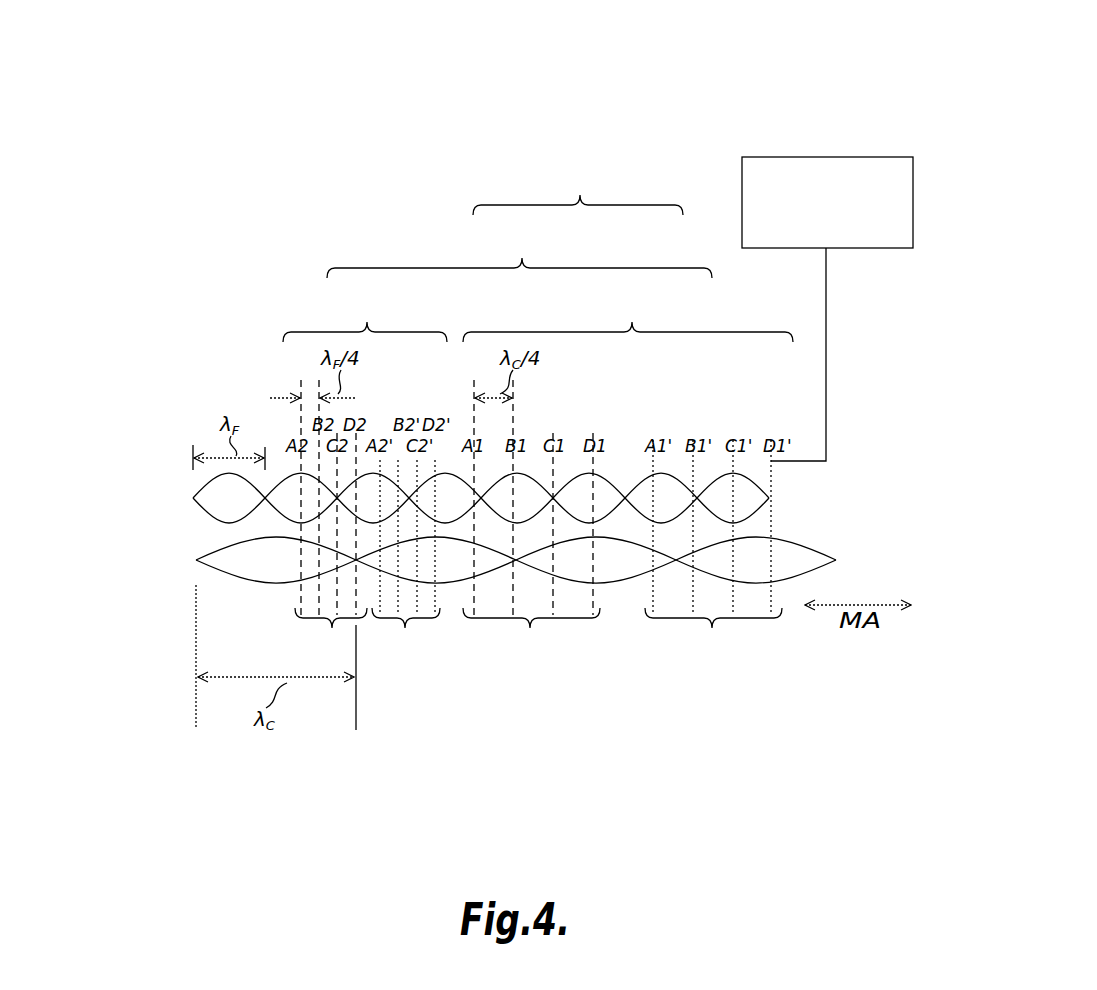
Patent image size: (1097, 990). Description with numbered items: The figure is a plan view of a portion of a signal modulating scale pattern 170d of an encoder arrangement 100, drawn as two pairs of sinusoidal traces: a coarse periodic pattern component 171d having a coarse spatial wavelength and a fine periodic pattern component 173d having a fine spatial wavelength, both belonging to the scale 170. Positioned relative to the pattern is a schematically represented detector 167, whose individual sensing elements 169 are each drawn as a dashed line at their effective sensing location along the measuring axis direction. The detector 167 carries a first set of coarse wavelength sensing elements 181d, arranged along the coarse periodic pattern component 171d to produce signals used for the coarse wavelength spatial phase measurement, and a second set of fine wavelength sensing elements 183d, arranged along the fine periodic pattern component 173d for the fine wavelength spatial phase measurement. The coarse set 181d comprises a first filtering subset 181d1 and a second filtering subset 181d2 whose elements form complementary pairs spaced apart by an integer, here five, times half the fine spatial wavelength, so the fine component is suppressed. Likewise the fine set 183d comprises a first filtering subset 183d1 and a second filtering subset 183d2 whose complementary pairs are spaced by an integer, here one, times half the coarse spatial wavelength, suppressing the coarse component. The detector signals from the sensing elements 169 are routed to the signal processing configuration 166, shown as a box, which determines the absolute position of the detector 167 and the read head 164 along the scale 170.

The encoder system 100 is at (740, 74).
The read head 164 is at (578, 189).
The signal processing configuration 166 is at (742, 200).
The detector 167 is at (519, 252).
The sensing element 169 is at (519, 252).
The scale 170 is at (172, 521).
The signal modulating scale pattern 170d is at (124, 540).
The coarse periodic pattern component 171d is at (840, 562).
The fine periodic pattern component 173d is at (810, 494).
The first set of coarse wavelength sensing elements 181d is at (628, 312).
The first filtering subset of the coarse wavelength sensing elements 181d1 is at (531, 517).
The second filtering subset of the coarse wavelength sensing elements 181d2 is at (713, 547).
The second set of fine wavelength sensing elements 183d is at (365, 312).
The first filtering subset of the fine wavelength sensing elements 183d1 is at (326, 517).
The second filtering subset of the fine wavelength sensing elements 183d2 is at (414, 557).